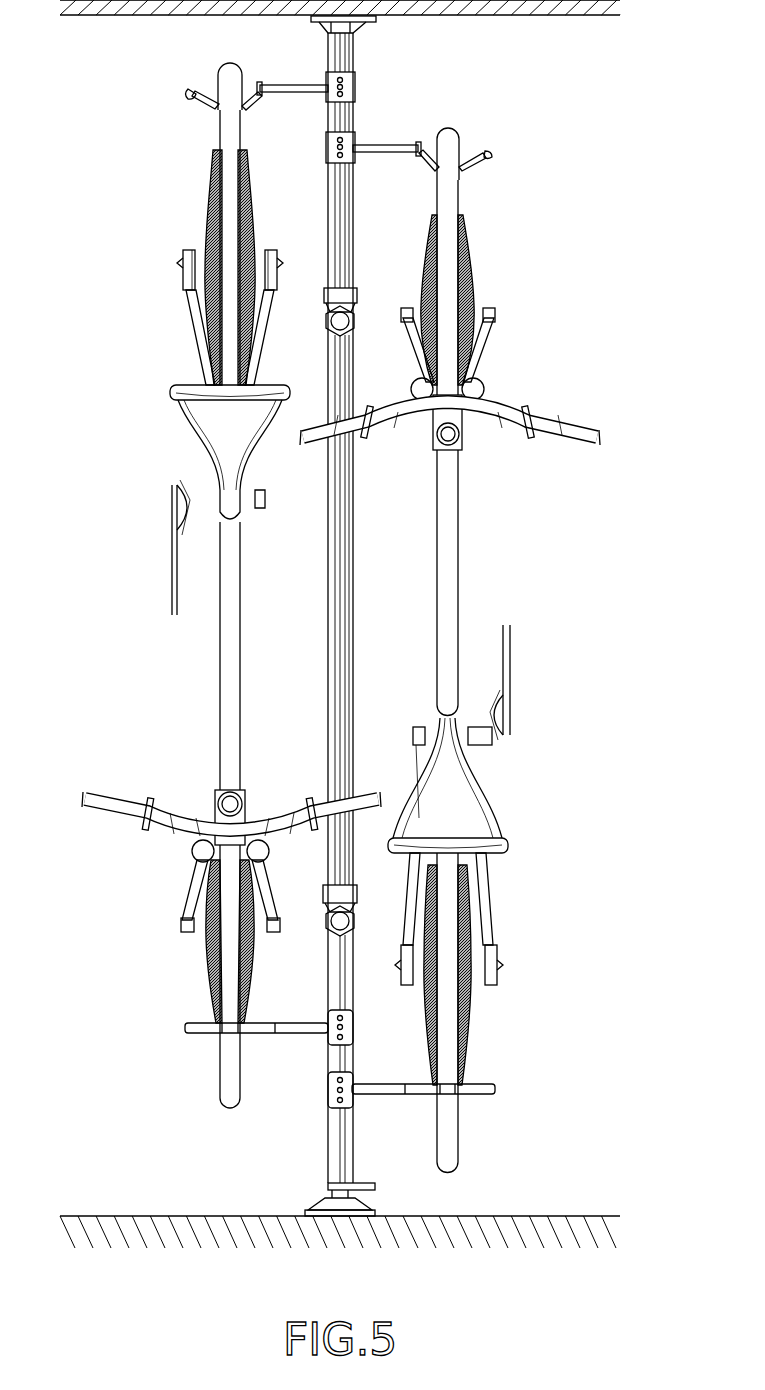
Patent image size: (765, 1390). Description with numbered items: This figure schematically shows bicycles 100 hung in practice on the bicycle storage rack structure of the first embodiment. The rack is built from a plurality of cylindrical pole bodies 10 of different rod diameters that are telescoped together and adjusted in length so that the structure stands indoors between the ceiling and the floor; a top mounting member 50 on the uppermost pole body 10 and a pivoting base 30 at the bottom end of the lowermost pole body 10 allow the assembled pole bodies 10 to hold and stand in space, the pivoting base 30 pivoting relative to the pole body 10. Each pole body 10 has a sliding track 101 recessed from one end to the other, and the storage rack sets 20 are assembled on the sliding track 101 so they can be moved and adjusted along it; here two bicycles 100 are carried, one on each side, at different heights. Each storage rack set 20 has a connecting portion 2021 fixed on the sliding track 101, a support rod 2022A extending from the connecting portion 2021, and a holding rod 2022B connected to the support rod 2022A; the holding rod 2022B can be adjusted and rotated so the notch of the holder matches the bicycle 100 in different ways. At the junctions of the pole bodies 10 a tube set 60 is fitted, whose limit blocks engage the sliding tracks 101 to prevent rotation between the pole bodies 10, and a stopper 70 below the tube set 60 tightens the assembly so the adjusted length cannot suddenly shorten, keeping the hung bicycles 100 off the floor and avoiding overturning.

The pole body 10 is at (274, 616).
The sliding track 101 is at (330, 210).
The storage rack set 20 is at (296, 1050).
The connecting portion 2021 is at (352, 86).
The support rod 2022A is at (298, 85).
The holding rod 2022B is at (190, 95).
The pivoting base 30 is at (300, 1203).
The top mounting member 50 is at (380, 27).
The tube set 60 is at (370, 300).
The stopper 70 is at (362, 338).
The bicycle 100 is at (146, 333).